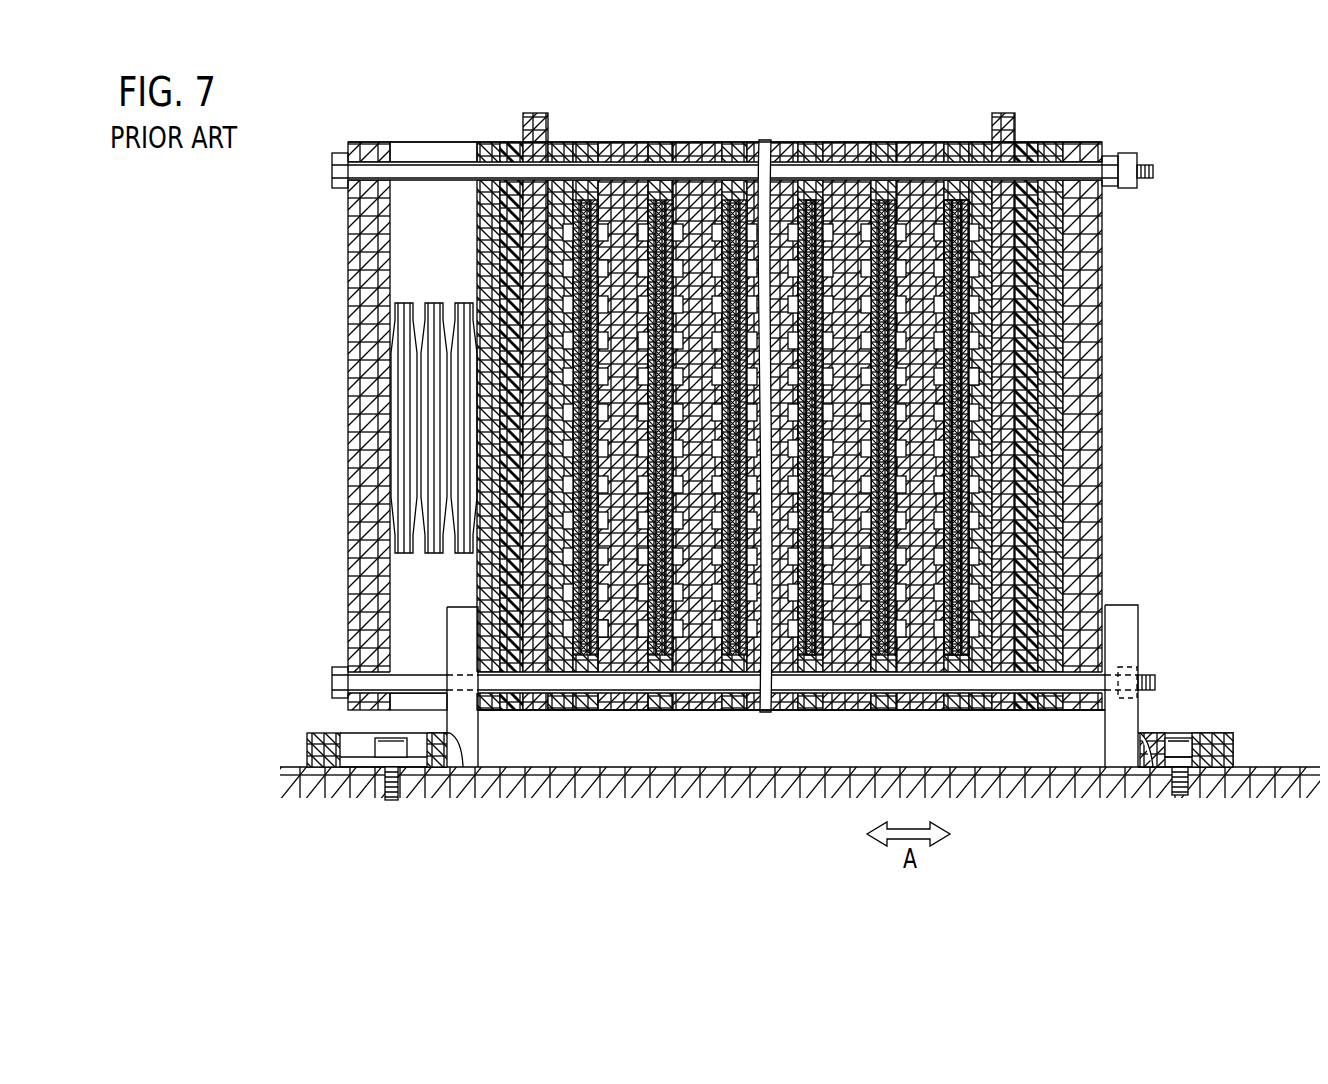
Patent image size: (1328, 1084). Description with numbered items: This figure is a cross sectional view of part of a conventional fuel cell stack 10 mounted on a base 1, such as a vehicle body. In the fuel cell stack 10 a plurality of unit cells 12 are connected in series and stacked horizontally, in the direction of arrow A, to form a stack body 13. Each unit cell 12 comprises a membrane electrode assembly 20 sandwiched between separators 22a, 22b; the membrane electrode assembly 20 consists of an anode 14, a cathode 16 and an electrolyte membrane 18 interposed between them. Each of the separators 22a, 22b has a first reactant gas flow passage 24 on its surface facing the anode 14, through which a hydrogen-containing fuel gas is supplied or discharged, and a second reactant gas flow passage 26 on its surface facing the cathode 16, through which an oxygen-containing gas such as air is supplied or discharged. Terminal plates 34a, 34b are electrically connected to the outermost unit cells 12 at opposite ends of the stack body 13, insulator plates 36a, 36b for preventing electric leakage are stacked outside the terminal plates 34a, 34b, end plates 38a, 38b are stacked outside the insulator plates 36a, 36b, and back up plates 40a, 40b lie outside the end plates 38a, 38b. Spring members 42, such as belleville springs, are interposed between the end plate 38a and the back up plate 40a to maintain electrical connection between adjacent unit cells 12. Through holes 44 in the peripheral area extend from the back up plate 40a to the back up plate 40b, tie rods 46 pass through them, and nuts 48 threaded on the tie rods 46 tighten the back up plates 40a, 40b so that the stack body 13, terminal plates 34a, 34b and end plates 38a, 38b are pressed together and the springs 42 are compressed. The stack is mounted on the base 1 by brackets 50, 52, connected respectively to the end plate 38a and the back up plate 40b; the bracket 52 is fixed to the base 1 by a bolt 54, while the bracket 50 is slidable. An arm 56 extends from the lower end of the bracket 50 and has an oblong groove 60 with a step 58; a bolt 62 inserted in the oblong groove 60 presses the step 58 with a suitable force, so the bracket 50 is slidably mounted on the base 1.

The base 1 is at (1260, 768).
The fuel cell stack 10 is at (275, 196).
The unit cell 12 is at (762, 836).
The stack body 13 is at (735, 133).
The anode 14 is at (970, 497).
The cathode 16 is at (965, 425).
The electrolyte membrane 18 is at (958, 445).
The membrane electrode assembly 20 is at (696, 713).
The separator 22a is at (622, 712).
The separator 22b is at (710, 713).
The first reactant gas flow passage 24 is at (625, 228).
The second reactant gas flow passage 26 is at (975, 388).
The terminal plate 34a is at (526, 118).
The terminal plate 34b is at (1014, 116).
The insulator plate 36a is at (508, 236).
The insulator plate 36b is at (1025, 300).
The end plate 38a is at (483, 280).
The end plate 38b is at (1052, 257).
The back up plate 40a is at (380, 466).
The back up plate 40b is at (1100, 212).
The spring member 42 is at (400, 387).
The through hole 44 is at (843, 713).
The tie rod 46 is at (417, 166).
The nut 48 is at (1127, 158).
The bracket 50 is at (472, 755).
The bracket 52 is at (1138, 622).
The bolt 54 is at (1176, 742).
The arm 56 is at (312, 748).
The step 58 is at (352, 738).
The oblong groove 60 is at (383, 768).
The bolt 62 is at (388, 797).